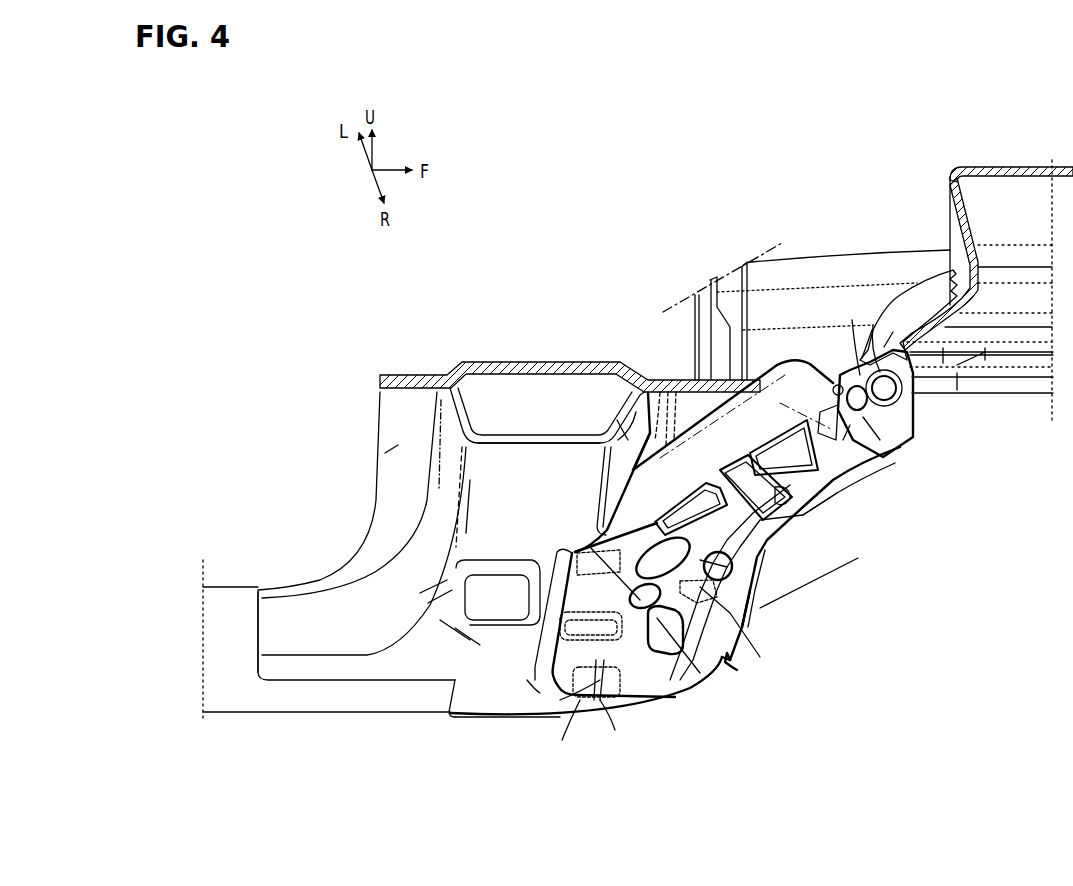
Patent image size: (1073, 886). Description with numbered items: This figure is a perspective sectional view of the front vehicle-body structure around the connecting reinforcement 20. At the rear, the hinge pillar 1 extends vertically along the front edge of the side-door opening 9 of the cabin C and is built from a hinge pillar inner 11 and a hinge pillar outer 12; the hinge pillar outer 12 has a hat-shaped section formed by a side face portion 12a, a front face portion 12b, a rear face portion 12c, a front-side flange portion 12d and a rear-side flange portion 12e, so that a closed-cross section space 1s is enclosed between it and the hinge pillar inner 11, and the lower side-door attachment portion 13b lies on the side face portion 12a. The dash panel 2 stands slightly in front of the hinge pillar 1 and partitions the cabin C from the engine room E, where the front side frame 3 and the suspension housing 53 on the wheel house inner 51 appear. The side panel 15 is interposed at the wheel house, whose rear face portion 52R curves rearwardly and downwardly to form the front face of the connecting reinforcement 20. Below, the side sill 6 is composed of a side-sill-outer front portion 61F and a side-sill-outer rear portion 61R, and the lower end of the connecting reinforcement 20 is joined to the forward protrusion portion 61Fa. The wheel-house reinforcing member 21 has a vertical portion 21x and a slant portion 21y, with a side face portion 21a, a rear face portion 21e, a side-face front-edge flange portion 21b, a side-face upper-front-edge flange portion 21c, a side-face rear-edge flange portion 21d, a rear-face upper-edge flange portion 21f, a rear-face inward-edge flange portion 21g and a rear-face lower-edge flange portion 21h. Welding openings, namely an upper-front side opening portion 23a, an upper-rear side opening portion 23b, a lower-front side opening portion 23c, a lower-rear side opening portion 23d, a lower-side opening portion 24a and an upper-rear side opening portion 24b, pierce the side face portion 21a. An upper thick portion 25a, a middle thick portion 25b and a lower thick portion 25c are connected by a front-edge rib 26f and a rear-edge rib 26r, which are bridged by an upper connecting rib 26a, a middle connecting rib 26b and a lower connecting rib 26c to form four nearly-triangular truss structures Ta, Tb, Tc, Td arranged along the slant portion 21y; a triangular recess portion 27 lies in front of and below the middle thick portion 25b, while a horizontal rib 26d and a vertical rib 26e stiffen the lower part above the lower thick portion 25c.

The hinge pillar 1 is at (377, 393).
The hinge pillar outer 12 is at (380, 410).
The rear-side flange portion 12e is at (380, 455).
The rear face portion 12c is at (455, 487).
The side face portion 12a is at (523, 460).
The front face portion 12b is at (625, 410).
The front-side flange portion 12d is at (660, 400).
The side-door opening 9 is at (281, 529).
The hinge pillar inner 11 is at (514, 360).
The closed-cross section space 1s is at (499, 412).
The side panel 15 is at (665, 400).
The rear-face inward-edge flange portion 21g is at (672, 400).
The dash panel 2 is at (700, 292).
The front side frame 3 is at (832, 252).
The suspension housing 53 is at (948, 172).
The wheel house inner 51 is at (896, 296).
The upper-rear side opening portion 24b is at (880, 375).
The side-face upper-front-edge flange portion 21c is at (858, 380).
The rear-face upper-edge flange portion 21f is at (833, 385).
The wheel-house reinforcing member 21 is at (680, 700).
The connecting reinforcement 20 is at (700, 700).
The truss structure Ta is at (818, 410).
The truss structure Tb is at (758, 447).
The truss structure Tc is at (724, 465).
The truss structure Td is at (688, 492).
The rear-edge rib 26r is at (644, 442).
The rear face portion 21e is at (628, 462).
The rear-face lower-edge flange portion 21h is at (606, 505).
The upper-rear side opening portion 23b is at (690, 550).
The upper-front side opening portion 23a is at (733, 568).
The lower-rear side opening portion 23d is at (640, 595).
The side-door attachment portion 13b is at (486, 595).
The horizontal rib 26d is at (610, 615).
The vertical portion 21x is at (540, 660).
The upper connecting rib 26a is at (862, 445).
The front-edge rib 26f is at (828, 487).
The middle connecting rib 26b is at (797, 513).
The lower connecting rib 26c is at (762, 550).
The slant portion 21y is at (837, 552).
The side-face front-edge flange portion 21b is at (757, 563).
The recess portion 27 is at (757, 627).
The middle thick portion 25b is at (725, 662).
The rear face portion 52R is at (732, 672).
The lower-front side opening portion 23c is at (716, 690).
The vertical rib 26e is at (665, 700).
The side face portion 21a is at (615, 718).
The lower thick portion 25c is at (597, 705).
The side-face rear-edge flange portion 21d is at (560, 705).
The forward protrusion portion 61Fa is at (720, 735).
The side-sill-outer rear portion 61R is at (328, 715).
The side-sill-outer front portion 61F is at (495, 725).
The side sill 6 is at (256, 716).
The lower-side opening portion 24a is at (905, 410).
The upper thick portion 25a is at (905, 445).
The cabin C is at (316, 330).
The engine room E is at (888, 158).